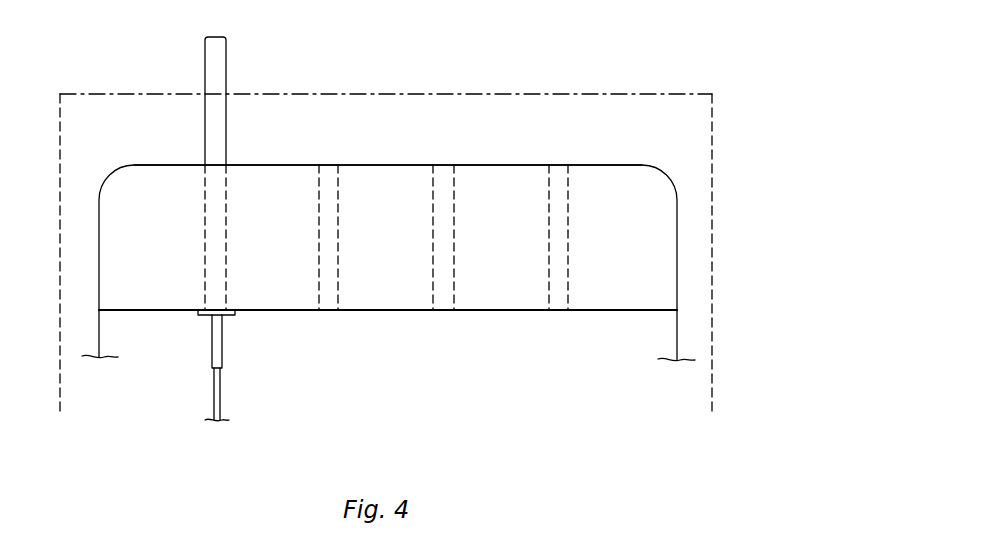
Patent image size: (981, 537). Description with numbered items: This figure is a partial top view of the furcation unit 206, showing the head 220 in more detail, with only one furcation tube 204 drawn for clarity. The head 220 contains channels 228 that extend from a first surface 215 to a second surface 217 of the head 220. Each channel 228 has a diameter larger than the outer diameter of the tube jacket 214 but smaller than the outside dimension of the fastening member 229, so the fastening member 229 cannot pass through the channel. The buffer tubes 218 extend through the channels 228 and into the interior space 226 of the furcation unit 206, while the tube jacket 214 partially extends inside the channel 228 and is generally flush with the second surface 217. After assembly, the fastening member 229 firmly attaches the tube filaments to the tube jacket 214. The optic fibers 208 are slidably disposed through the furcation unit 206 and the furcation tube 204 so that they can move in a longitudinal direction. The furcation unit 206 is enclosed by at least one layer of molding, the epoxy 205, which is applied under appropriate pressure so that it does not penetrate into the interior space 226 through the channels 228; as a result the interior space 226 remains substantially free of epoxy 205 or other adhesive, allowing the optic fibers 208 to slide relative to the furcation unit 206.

The furcation tube 204 is at (135, 167).
The epoxy 205 is at (672, 95).
The furcation unit 206 is at (706, 128).
The optic fibers 208 is at (212, 393).
The tube jacket 214 is at (205, 73).
The first surface 215 is at (520, 164).
The second surface 217 is at (502, 312).
The buffer tubes 218 is at (222, 340).
The head 220 is at (683, 237).
The interior space 226 is at (644, 344).
The channels 228 is at (340, 193).
The fastening member 229 is at (200, 318).